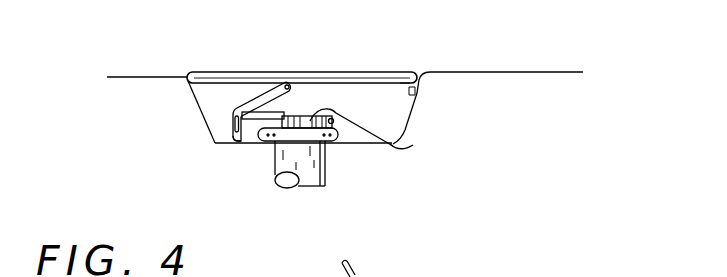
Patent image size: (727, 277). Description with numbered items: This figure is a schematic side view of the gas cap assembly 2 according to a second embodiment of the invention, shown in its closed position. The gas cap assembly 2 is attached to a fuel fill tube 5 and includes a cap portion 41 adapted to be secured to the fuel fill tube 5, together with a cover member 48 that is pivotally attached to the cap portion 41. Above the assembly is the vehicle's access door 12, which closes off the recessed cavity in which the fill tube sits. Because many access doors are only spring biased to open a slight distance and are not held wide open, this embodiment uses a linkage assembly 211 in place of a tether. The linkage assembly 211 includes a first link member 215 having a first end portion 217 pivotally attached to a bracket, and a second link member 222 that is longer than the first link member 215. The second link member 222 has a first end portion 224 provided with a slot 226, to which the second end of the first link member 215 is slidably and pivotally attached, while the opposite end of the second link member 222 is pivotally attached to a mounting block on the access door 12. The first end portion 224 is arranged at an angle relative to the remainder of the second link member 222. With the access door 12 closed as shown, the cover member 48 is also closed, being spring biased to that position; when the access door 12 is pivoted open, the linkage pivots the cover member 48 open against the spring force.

The gas cap assembly 2 is at (198, 60).
The access door 12 is at (333, 78).
The linkage assembly 211 is at (217, 110).
The second link member 222 is at (258, 92).
The slot 226 is at (232, 124).
The first end portion 224 is at (232, 142).
The first end portion 217 is at (288, 113).
The cap portion 41 is at (356, 144).
The first link member 215 is at (250, 143).
The cover member 48 is at (417, 142).
The fuel fill tube 5 is at (322, 168).